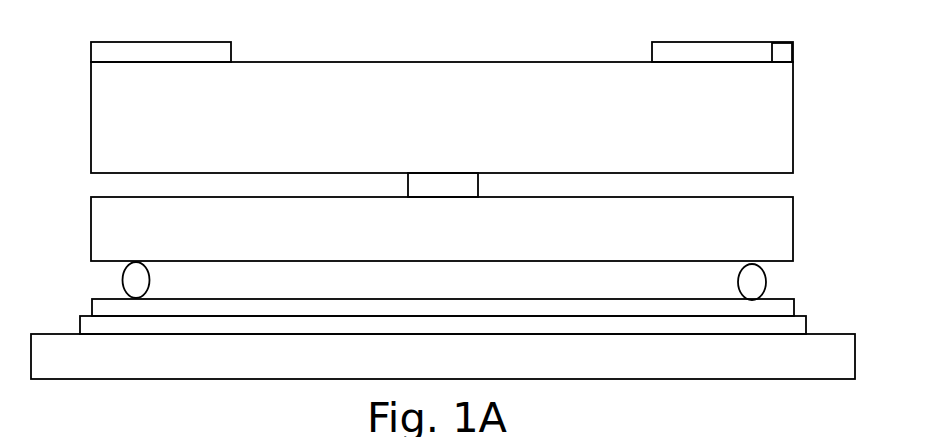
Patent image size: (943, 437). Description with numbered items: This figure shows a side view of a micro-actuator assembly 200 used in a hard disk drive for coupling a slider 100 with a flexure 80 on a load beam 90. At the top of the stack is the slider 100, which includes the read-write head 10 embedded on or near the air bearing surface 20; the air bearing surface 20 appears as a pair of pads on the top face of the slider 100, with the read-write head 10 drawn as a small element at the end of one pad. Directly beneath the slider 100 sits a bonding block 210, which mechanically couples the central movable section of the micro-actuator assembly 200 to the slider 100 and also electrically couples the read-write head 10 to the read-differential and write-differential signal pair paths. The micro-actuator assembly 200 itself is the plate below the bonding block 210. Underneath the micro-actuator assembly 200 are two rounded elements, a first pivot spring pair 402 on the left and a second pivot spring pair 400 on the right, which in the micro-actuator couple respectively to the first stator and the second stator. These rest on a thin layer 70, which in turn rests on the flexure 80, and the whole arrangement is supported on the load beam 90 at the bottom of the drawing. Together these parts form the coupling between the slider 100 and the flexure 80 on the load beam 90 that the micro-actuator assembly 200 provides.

The read-write head 10 is at (780, 56).
The air bearing surface 20 is at (82, 43).
The layer 70 is at (418, 297).
The flexure 80 is at (808, 328).
The load beam 90 is at (443, 356).
The slider 100 is at (442, 117).
The micro-actuator assembly 200 is at (442, 229).
The bonding block 210 is at (443, 186).
The second pivot spring pair 400 is at (737, 292).
The first pivot spring pair 402 is at (121, 288).